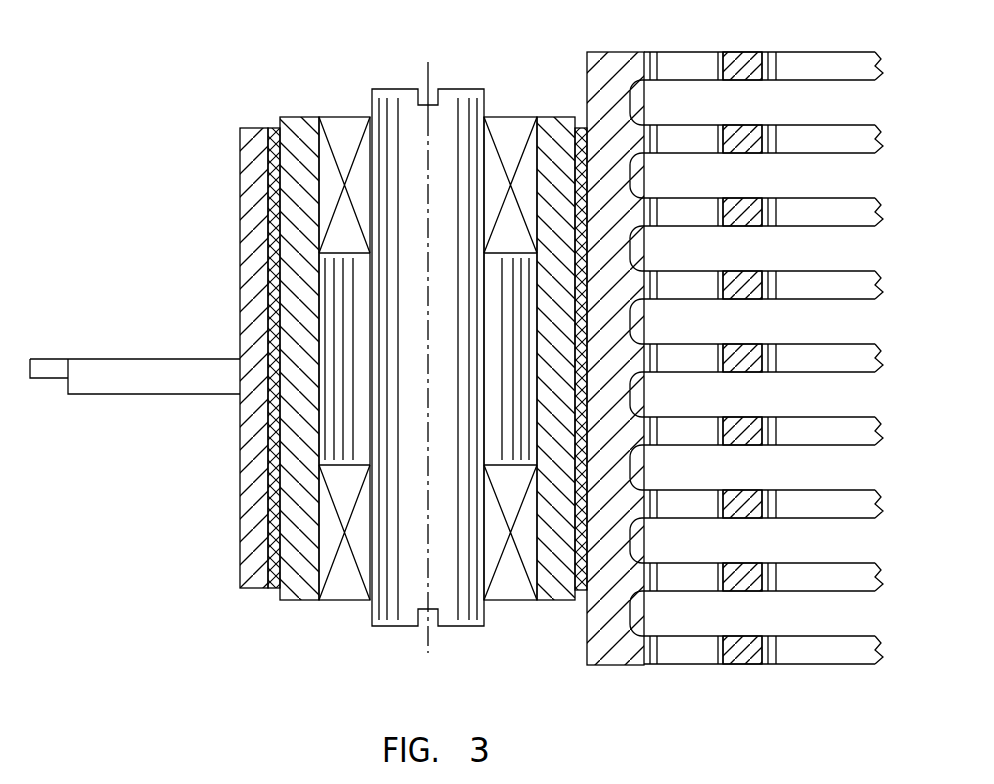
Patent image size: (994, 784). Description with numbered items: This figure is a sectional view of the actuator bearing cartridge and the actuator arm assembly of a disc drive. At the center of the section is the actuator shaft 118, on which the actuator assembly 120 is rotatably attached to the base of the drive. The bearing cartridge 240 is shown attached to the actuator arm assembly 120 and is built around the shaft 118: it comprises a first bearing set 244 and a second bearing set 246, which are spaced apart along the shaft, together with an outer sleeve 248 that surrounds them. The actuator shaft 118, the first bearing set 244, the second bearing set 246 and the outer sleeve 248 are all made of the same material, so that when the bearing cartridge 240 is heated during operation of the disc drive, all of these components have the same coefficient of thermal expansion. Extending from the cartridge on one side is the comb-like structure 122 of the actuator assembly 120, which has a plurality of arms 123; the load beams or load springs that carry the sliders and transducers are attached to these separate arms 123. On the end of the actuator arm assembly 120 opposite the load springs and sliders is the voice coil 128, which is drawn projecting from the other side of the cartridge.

The actuator shaft 118 is at (398, 89).
The actuator assembly 120 is at (255, 128).
The comb-like structure 122 is at (822, 58).
The arms 123 is at (818, 215).
The voice coil 128 is at (52, 359).
The bearing cartridge 240 is at (302, 117).
The first bearing set 244 is at (514, 117).
The second bearing set 246 is at (510, 601).
The outer sleeve 248 is at (303, 601).